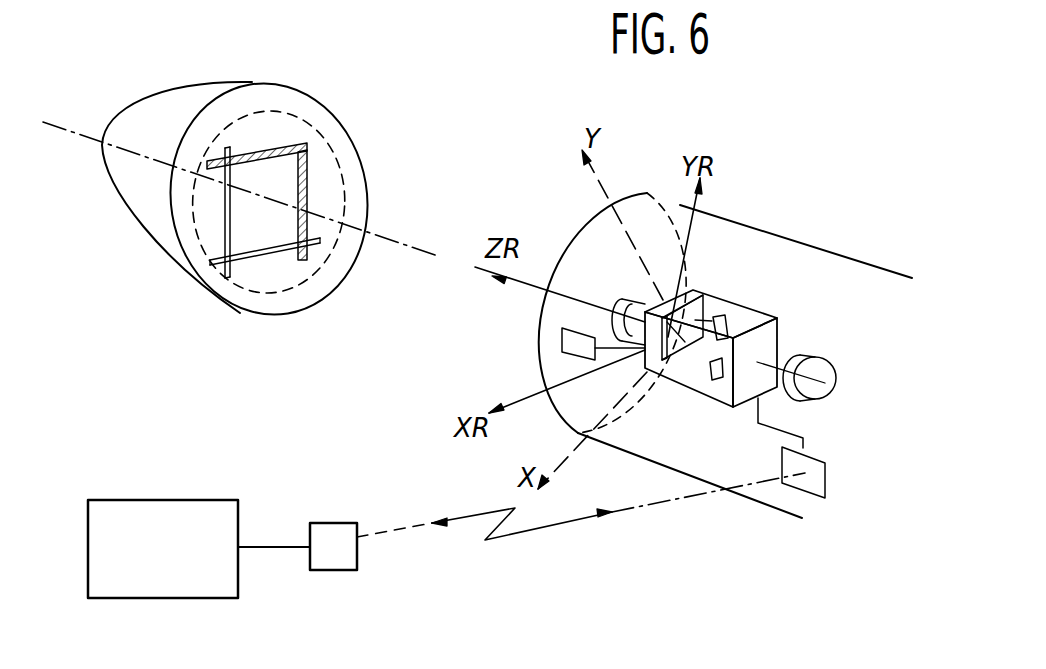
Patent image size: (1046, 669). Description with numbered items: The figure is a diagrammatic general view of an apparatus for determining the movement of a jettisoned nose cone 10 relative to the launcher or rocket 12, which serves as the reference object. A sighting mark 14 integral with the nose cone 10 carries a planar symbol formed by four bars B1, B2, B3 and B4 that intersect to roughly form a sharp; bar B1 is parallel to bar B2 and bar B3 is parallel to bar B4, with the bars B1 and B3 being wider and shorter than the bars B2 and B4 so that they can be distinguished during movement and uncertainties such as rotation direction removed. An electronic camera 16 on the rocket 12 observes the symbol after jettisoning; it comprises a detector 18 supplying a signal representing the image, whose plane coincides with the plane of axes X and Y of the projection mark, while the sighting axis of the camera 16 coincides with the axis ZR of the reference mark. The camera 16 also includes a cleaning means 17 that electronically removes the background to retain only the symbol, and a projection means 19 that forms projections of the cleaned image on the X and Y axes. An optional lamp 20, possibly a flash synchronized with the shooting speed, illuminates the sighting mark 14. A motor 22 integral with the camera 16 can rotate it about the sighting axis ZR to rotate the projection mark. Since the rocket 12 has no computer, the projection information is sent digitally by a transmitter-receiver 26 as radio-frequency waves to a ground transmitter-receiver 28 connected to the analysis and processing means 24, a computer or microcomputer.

The nose cone 10 is at (140, 240).
The rocket 12 is at (732, 216).
The sighting mark 14 is at (257, 290).
The electronic camera 16 is at (777, 318).
The cleaning means 17 is at (728, 304).
The detector 18 is at (703, 300).
The projection means 19 is at (713, 382).
The lamp 20 is at (562, 347).
The motor 22 is at (828, 364).
The analysis and processing means 24 is at (207, 499).
The transmitter-receiver 26 is at (827, 468).
The transmitter-receiver 28 is at (338, 528).
The bar B1 is at (293, 140).
The bar B2 is at (280, 250).
The bar B3 is at (307, 192).
The bar B4 is at (233, 143).